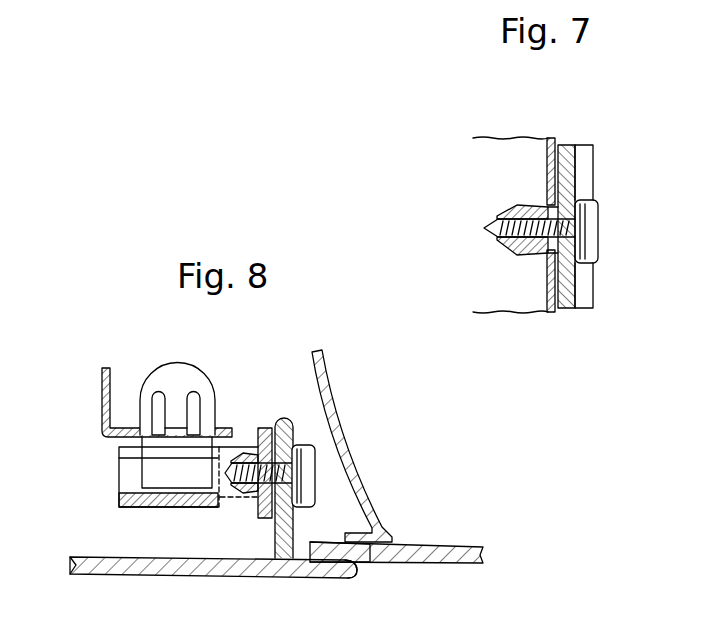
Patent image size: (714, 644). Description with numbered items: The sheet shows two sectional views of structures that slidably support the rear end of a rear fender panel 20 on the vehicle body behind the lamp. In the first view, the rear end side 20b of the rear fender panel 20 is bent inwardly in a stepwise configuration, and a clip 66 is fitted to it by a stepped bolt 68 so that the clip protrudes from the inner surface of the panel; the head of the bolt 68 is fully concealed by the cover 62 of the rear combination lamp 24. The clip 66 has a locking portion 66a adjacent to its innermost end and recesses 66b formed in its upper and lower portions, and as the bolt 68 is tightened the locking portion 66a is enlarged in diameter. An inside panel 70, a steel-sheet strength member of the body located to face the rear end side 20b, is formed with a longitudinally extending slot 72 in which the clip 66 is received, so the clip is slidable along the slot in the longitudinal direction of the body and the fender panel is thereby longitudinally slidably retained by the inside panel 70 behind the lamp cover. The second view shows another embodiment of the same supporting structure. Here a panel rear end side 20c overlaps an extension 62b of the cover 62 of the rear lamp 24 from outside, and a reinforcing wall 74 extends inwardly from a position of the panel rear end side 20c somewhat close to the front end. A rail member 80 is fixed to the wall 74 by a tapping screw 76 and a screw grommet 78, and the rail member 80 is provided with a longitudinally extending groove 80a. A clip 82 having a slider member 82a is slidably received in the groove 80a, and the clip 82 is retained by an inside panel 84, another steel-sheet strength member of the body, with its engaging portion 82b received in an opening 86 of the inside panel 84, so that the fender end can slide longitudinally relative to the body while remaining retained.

In FIG. 7, the rear fender panel 20 is at (597, 288).
In FIG. 8, the rear fender panel 20 is at (213, 592).
In FIG. 7, the rear end side of the rear fender panel 20b is at (572, 145).
In FIG. 8, the panel rear end side 20c is at (331, 580).
In FIG. 8, the rear combination lamp 24 is at (470, 566).
In FIG. 8, the cover 62 is at (396, 581).
In FIG. 8, the extension of the cover 62b is at (368, 553).
In FIG. 7, the clip 66 is at (500, 225).
In FIG. 7, the locking portion 66a is at (517, 210).
In FIG. 7, the recesses 66b is at (545, 207).
In FIG. 7, the stepped bolt 68 is at (491, 226).
In FIG. 7, the inside panel 70 is at (550, 137).
In FIG. 7, the slot 72 is at (566, 223).
In FIG. 8, the wall 74 is at (294, 522).
In FIG. 8, the tapping screw 76 is at (317, 465).
In FIG. 8, the screw grommet 78 is at (253, 488).
In FIG. 8, the rail member 80 is at (160, 487).
In FIG. 8, the groove 80a is at (128, 455).
In FIG. 8, the clip 82 is at (149, 409).
In FIG. 8, the slider member 82a is at (153, 472).
In FIG. 8, the engaging portion 82b is at (205, 398).
In FIG. 8, the inside panel 84 is at (102, 395).
In FIG. 8, the opening 86 is at (193, 427).